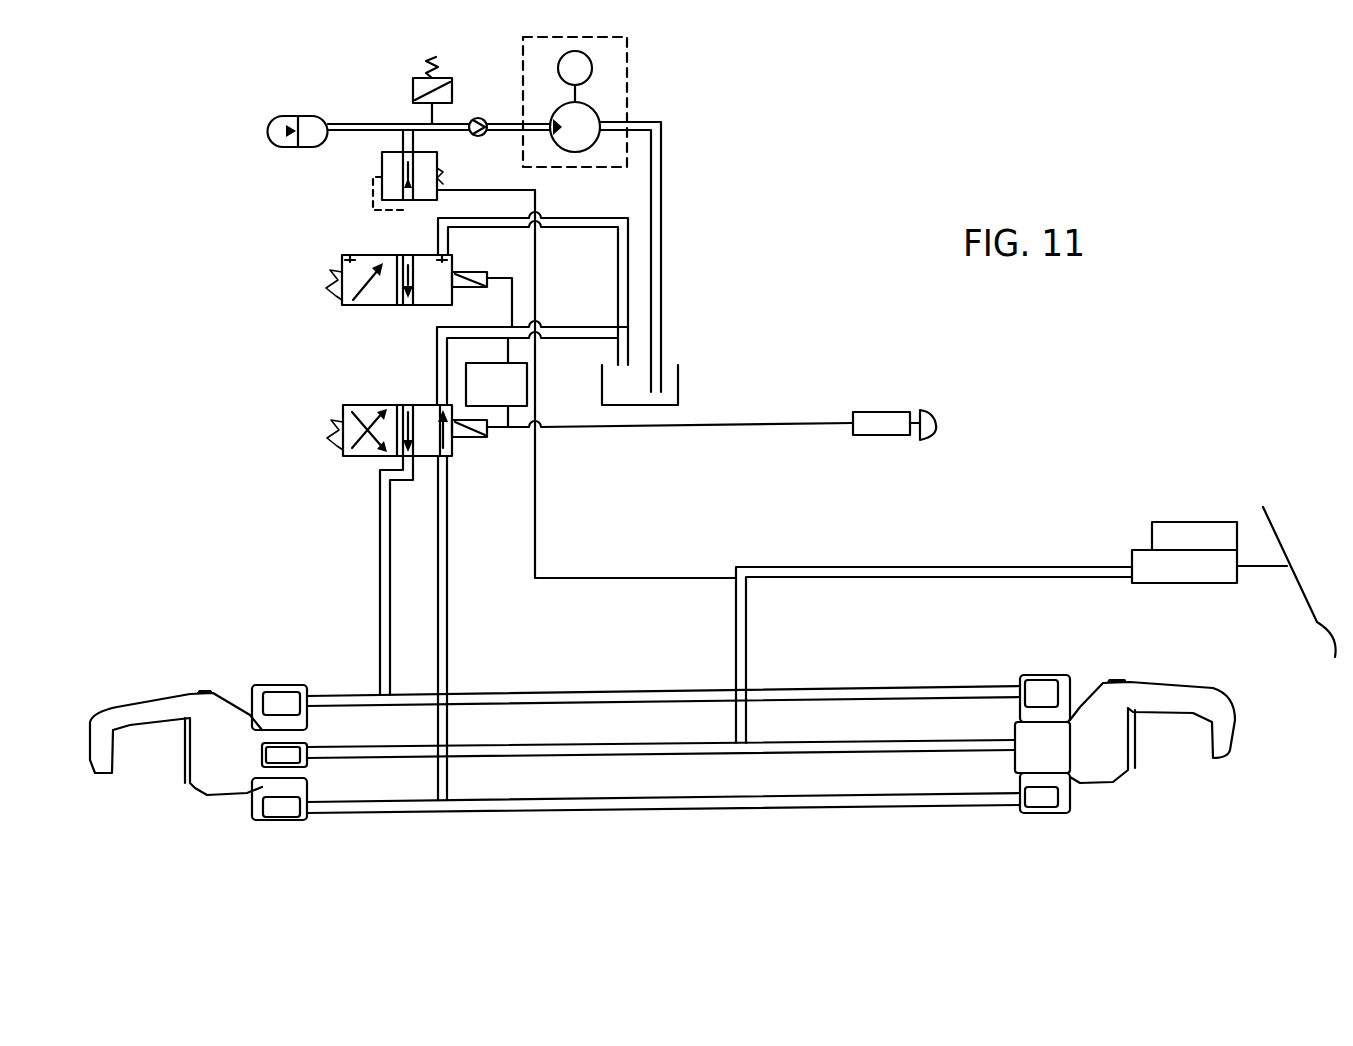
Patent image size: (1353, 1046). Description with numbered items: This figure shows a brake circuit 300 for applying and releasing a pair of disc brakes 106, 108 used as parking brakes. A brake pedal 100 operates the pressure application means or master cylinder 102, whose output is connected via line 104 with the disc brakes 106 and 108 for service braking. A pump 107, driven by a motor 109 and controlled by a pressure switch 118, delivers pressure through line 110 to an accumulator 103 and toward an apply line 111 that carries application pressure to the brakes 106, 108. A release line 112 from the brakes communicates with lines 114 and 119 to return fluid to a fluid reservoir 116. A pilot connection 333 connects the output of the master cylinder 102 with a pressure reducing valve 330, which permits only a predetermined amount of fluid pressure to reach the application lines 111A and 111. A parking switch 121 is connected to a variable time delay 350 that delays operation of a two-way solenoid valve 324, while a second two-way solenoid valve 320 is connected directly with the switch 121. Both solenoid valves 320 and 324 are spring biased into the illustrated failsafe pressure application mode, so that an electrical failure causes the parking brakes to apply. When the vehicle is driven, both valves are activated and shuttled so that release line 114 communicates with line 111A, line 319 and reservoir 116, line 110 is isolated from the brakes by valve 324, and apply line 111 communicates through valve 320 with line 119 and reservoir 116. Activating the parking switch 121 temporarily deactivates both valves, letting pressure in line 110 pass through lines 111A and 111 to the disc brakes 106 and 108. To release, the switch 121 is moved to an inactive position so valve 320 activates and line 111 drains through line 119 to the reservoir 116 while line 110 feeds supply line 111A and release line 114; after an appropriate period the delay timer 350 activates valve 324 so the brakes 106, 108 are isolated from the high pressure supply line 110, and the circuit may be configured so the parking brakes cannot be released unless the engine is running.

The brake pedal 100 is at (1300, 600).
The master cylinder 102 is at (1172, 584).
The accumulator 103 is at (300, 116).
The line 104 is at (746, 630).
The disc brake 106 is at (168, 700).
The pump 107 is at (627, 92).
The disc brake 108 is at (1160, 683).
The motor 109 is at (592, 63).
The line 110 is at (375, 124).
The apply line 111 is at (380, 532).
The supply line 111A is at (415, 328).
The release line 112 is at (690, 806).
The release line 114 is at (448, 637).
The fluid reservoir 116 is at (680, 380).
The pressure switch 118 is at (450, 78).
The release line 119 is at (572, 340).
The parking switch 121 is at (888, 412).
The brake circuit 300 is at (803, 192).
The line 319 is at (571, 220).
The second two-way solenoid valve 320 is at (340, 420).
The two-way solenoid valve 324 is at (340, 268).
The pressure reducing valve 330 is at (382, 165).
The pilot connection 333 is at (603, 578).
The variable time delay 350 is at (517, 398).